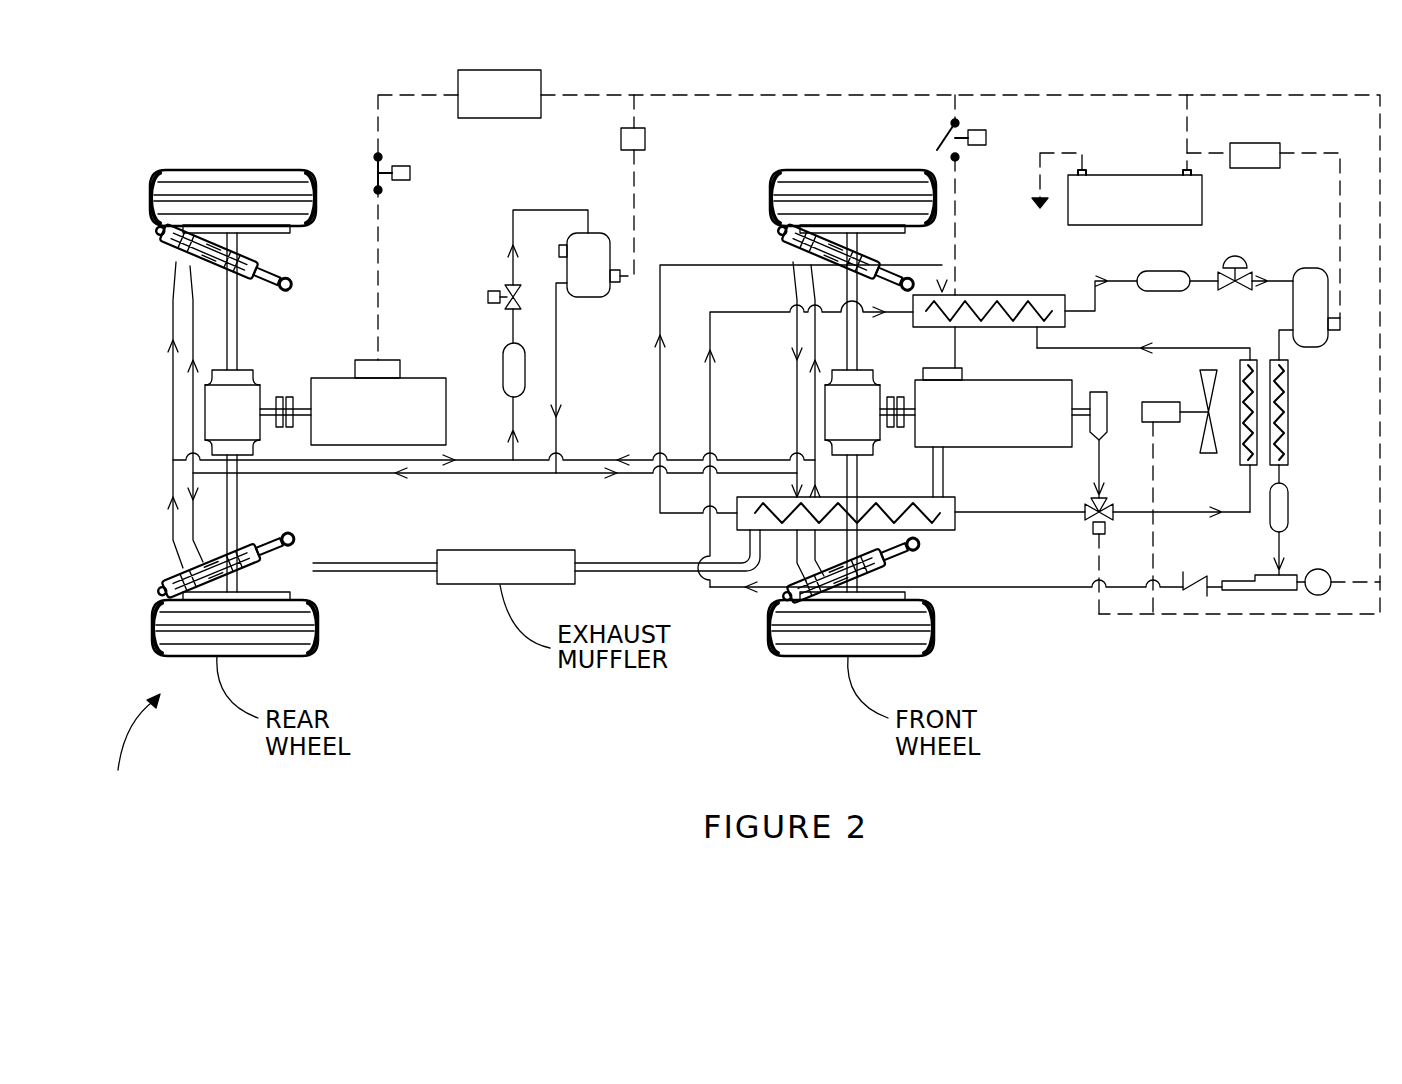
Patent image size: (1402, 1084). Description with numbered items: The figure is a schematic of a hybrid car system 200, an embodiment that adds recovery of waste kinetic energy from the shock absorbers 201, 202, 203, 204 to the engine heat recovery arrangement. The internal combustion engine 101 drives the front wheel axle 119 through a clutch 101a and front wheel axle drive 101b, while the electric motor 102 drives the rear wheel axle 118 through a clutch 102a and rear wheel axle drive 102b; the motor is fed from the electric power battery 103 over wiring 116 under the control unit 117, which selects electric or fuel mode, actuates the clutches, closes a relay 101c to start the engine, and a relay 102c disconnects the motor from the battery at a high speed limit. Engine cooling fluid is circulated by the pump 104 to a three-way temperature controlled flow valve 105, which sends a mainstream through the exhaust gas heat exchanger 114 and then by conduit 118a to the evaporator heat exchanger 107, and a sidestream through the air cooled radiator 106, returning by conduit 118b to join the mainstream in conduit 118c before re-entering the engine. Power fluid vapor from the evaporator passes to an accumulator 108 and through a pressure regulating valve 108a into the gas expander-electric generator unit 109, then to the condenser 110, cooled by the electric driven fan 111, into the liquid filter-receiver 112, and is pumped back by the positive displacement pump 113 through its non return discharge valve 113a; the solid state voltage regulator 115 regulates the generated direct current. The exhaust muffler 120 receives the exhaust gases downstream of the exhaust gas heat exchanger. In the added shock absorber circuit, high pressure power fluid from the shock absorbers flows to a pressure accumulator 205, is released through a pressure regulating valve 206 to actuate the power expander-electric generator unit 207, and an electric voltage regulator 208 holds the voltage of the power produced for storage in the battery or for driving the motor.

The internal combustion engine 101 is at (968, 447).
The clutch 101a is at (890, 397).
The front wheel axle drive 101b is at (800, 418).
The relay 101c is at (977, 130).
The electric motor 102 is at (446, 402).
The clutch 102a is at (280, 397).
The rear wheel axle drive 102b is at (205, 420).
The relay 102c is at (410, 166).
The electric power battery 103 is at (1103, 175).
The circulating pump 104 is at (1099, 392).
The three-way temperature controlled flow valve 105 is at (1093, 530).
The air cooled radiator 106 is at (1247, 468).
The evaporator heat exchanger 107 is at (1000, 295).
The accumulator 108 is at (1152, 271).
The pressure regulating valve 108a is at (1236, 262).
The gas expander-electric generator unit 109 is at (1293, 320).
The condenser 110 is at (1290, 416).
The electric driven fan 111 is at (1172, 402).
The liquid filter-receiver 112 is at (1292, 500).
The positive displacement pump 113 is at (1288, 575).
The non return discharge valve 113a is at (1183, 580).
The exhaust gas heat exchanger 114 is at (955, 500).
The solid state voltage regulator 115 is at (1255, 143).
The wiring 116 is at (1062, 93).
The control unit 117 is at (497, 70).
The rear wheel axle 118 is at (243, 522).
The conduit 118a is at (660, 398).
The conduit 118b is at (1212, 348).
The conduit 118c is at (1037, 340).
The front wheel axle 119 is at (857, 487).
The exhaust muffler 120 is at (405, 550).
The system 200 is at (128, 750).
The shock absorber 201 is at (858, 240).
The shock absorber 202 is at (890, 566).
The shock absorber 203 is at (255, 240).
The shock absorber 204 is at (273, 572).
The pressure accumulator 205 is at (503, 355).
The pressure regulating valve 206 is at (500, 292).
The power expander-electric generator unit 207 is at (604, 233).
The electric voltage regulator 208 is at (645, 140).